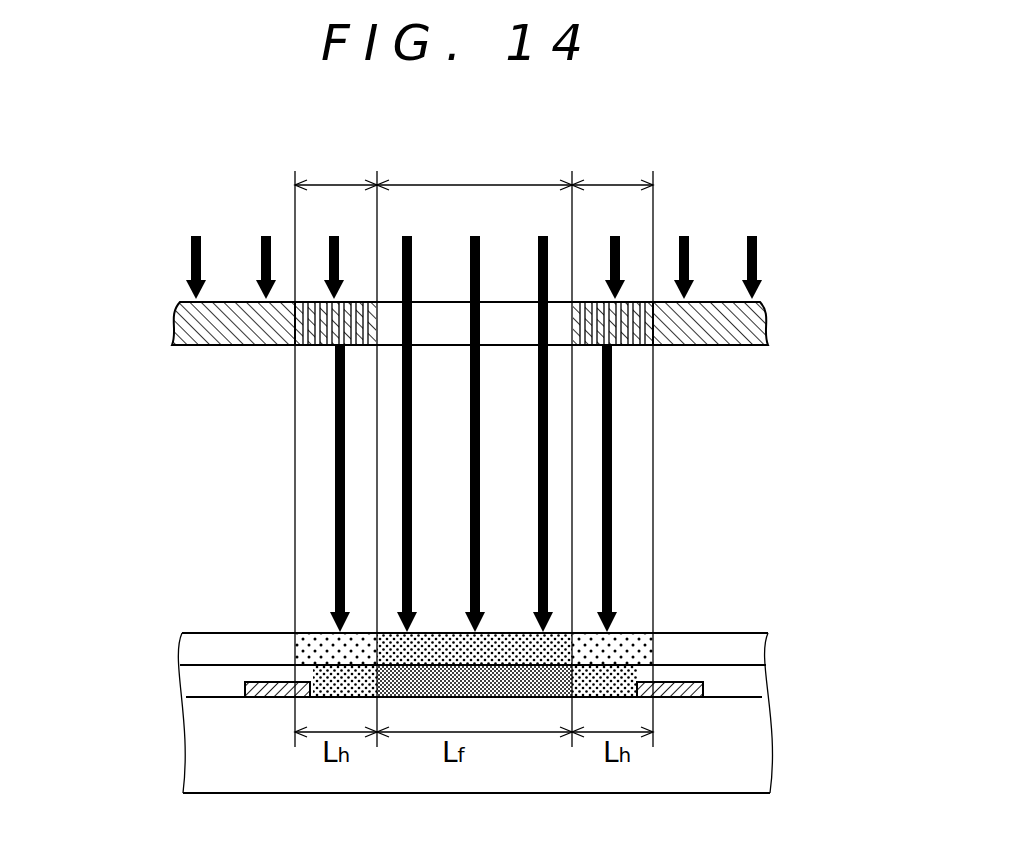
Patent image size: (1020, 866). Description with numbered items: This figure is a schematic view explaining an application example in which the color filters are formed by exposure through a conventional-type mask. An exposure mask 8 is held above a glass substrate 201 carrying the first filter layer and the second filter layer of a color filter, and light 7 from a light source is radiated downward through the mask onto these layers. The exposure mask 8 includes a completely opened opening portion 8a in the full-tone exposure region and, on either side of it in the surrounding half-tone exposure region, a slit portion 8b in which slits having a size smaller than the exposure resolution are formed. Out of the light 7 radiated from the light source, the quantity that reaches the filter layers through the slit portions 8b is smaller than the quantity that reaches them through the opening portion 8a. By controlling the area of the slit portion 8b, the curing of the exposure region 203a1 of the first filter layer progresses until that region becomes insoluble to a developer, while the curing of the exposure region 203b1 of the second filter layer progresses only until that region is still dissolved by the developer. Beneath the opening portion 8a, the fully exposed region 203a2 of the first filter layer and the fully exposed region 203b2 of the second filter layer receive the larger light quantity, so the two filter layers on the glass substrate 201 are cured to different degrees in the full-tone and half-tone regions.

The ion beam / implanted ions 7 is at (333, 432).
The exposure mask 8 is at (517, 247).
The opening portion 8a is at (474, 225).
The slit portion 8b is at (474, 247).
The glass substrate 201 is at (747, 745).
The exposure region of the first filter layer 203a1 is at (300, 680).
The high-concentration region / layer 203a2 is at (535, 680).
The exposure region of the second filter layer 203b1 is at (320, 650).
The shallow high-concentration region 203b2 is at (498, 647).